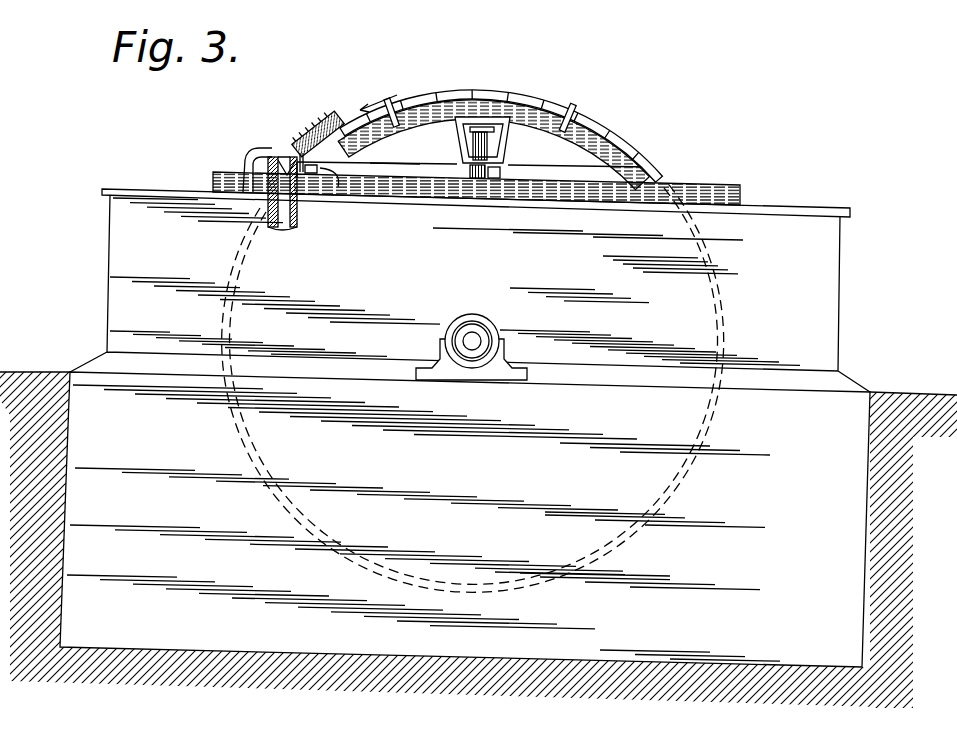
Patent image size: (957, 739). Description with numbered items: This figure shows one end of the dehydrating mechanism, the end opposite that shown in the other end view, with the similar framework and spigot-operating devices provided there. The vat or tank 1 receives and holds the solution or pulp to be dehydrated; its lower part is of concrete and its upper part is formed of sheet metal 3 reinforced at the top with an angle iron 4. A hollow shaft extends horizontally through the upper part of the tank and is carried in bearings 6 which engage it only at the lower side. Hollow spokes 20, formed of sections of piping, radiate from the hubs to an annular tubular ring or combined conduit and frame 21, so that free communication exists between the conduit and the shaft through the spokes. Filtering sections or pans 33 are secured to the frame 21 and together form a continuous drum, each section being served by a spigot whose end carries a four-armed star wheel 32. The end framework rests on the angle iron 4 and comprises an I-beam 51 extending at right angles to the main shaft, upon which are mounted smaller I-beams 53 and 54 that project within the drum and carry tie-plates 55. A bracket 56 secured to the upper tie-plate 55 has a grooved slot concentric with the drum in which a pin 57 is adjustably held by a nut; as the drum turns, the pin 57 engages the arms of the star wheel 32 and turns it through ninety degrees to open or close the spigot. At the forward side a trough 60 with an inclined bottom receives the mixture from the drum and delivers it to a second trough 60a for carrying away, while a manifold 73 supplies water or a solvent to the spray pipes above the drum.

The vat or tank 1 is at (816, 501).
The sheet metal 3 is at (470, 293).
The angle iron 4 is at (807, 212).
The bearing 6 is at (505, 369).
The hollow spoke 20 is at (494, 150).
The annular tubular ring or combined conduit and frame 21 is at (613, 133).
The star wheel 32 is at (518, 103).
The filtering section or pan 33 is at (580, 113).
The I-beam 51 is at (440, 193).
The I-beam 53 is at (503, 177).
The I-beam 54 is at (333, 190).
The tie-plate 55 is at (392, 164).
The bracket 56 is at (462, 138).
The pin 57 is at (460, 119).
The trough 60 is at (280, 160).
The second trough 60a is at (287, 213).
The manifold 73 is at (325, 120).